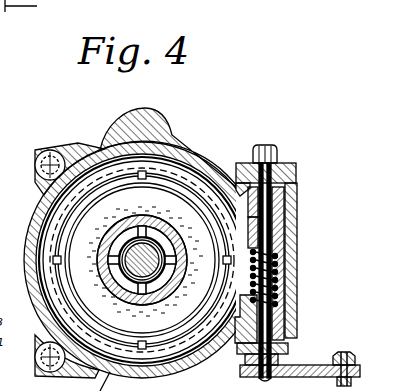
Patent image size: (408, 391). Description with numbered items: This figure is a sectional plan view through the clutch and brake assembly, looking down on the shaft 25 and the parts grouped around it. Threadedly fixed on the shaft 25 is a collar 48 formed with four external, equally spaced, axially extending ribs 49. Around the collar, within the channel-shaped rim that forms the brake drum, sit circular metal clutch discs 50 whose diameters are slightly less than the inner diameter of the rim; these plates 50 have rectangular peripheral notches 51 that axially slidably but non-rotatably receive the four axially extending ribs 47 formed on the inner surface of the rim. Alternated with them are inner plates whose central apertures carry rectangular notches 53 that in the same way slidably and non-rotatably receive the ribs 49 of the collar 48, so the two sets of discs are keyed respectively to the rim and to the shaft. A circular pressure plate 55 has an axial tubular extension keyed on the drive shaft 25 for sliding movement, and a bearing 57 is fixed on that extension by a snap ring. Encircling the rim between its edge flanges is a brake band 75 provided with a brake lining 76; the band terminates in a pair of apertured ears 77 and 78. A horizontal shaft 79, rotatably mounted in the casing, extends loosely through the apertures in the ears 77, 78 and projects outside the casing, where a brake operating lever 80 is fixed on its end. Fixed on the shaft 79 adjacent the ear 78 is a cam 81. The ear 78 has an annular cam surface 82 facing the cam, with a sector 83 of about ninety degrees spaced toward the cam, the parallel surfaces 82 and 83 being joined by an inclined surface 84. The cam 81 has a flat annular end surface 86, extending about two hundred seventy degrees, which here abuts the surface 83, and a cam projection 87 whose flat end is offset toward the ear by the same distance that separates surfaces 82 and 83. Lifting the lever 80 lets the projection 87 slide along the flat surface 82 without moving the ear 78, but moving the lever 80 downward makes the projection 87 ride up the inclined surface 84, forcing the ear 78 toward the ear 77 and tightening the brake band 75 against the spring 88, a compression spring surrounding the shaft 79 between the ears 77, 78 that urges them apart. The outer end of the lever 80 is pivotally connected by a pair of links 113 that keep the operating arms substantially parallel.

The shaft 25 is at (168, 303).
The ribs 47 is at (141, 180).
The collar 48 is at (194, 190).
The ribs 49 is at (112, 272).
The clutch discs 50 is at (177, 186).
The rectangular peripheral notches 51 is at (146, 180).
The rectangular notches 53 is at (104, 238).
The pressure plate 55 is at (100, 234).
The bearing 57 is at (62, 258).
The brake band 75 is at (214, 352).
The brake lining 76 is at (28, 284).
The ear 77 is at (290, 288).
The ear 78 is at (295, 249).
The horizontal shaft 79 is at (296, 320).
The brake operating lever 80 is at (300, 366).
The cam 81 is at (297, 194).
The cam surface 82 is at (250, 238).
The sector 83 is at (248, 223).
The inclined surface 84 is at (298, 205).
The flat annular end surface 86 is at (250, 186).
The cam projection 87 is at (297, 233).
The compression spring 88 is at (293, 270).
The links 113 is at (357, 368).